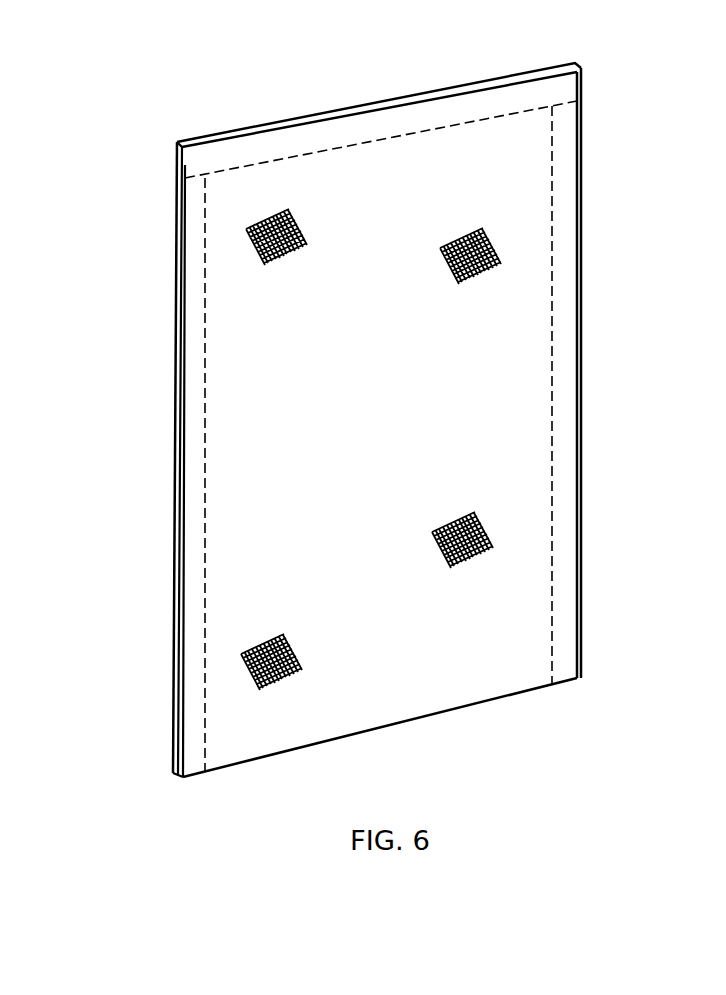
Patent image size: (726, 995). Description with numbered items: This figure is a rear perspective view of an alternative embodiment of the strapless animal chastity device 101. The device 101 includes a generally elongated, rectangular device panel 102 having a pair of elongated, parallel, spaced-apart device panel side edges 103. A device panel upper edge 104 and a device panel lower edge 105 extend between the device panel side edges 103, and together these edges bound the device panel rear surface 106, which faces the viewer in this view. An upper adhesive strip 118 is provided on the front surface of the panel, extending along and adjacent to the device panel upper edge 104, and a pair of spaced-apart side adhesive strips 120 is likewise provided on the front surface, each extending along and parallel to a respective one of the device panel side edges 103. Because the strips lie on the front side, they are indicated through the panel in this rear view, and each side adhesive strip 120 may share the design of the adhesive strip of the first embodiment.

The animal chastity device 101 is at (172, 98).
The device panel 102 is at (176, 326).
The device panel side edges 103 is at (173, 457).
The device panel upper edge 104 is at (417, 97).
The device panel lower edge 105 is at (447, 713).
The device panel rear surface 106 is at (524, 368).
The upper adhesive strip 118 is at (316, 138).
The side adhesive strips 120 is at (203, 519).